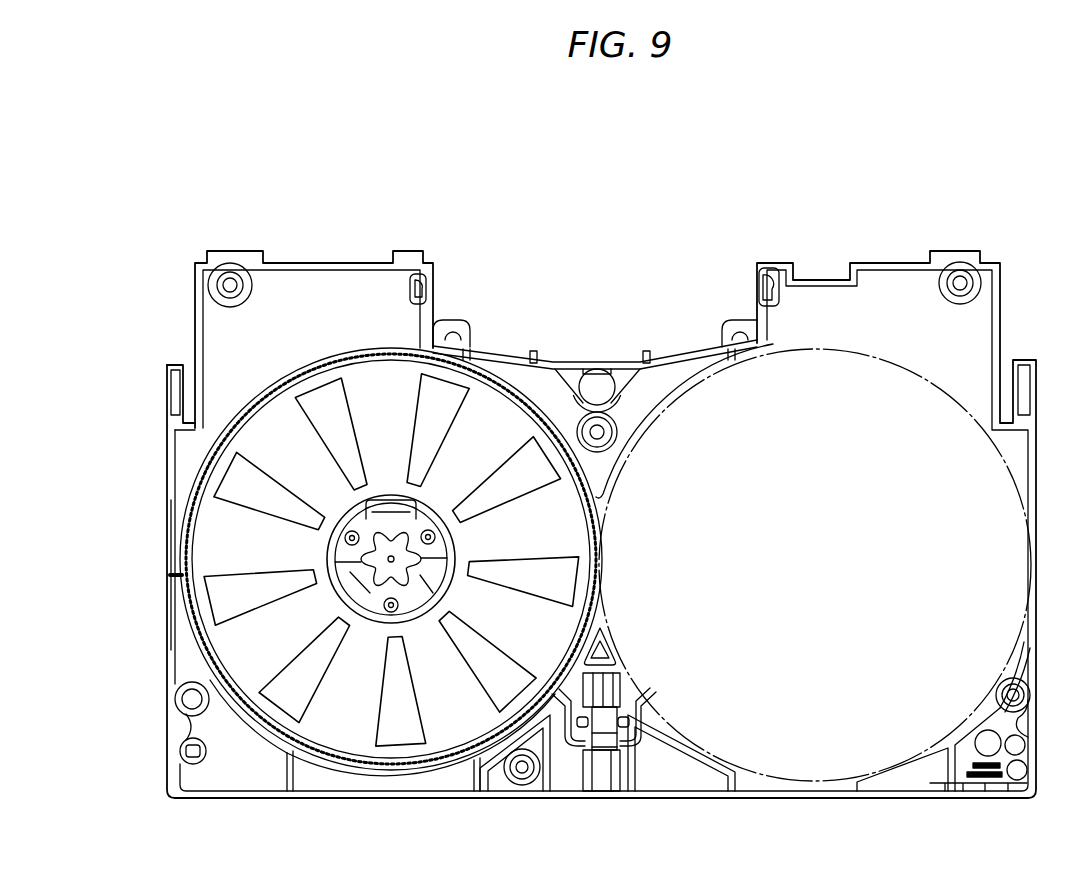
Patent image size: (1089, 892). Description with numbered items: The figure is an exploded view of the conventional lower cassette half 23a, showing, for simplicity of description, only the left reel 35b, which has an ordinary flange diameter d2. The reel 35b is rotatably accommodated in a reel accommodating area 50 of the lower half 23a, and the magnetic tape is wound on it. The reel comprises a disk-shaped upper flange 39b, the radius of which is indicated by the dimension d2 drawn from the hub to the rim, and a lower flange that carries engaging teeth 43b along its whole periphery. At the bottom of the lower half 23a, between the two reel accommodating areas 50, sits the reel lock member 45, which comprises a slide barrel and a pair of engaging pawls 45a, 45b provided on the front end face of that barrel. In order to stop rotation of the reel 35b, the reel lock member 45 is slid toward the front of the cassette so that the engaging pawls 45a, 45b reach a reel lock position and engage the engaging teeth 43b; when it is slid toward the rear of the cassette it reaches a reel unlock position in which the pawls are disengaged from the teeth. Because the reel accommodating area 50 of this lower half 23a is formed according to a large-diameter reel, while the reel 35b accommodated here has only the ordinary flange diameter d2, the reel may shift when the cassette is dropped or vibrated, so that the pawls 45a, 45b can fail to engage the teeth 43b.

The lower half 23a is at (857, 250).
The reel 35b is at (183, 576).
The upper flange 39b is at (228, 537).
The engaging teeth 43b is at (458, 790).
The reel lock member 45 is at (623, 689).
The engaging pawl 45a is at (562, 734).
The engaging pawl 45b is at (650, 726).
The reel accommodating area 50 is at (672, 395).
The flange diameter d2 is at (391, 559).